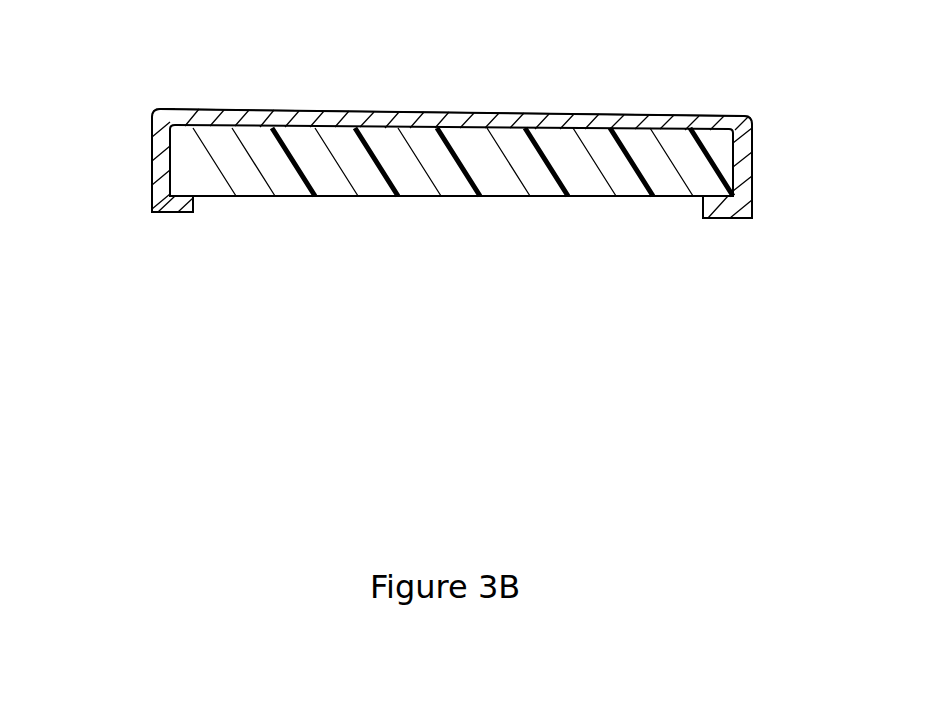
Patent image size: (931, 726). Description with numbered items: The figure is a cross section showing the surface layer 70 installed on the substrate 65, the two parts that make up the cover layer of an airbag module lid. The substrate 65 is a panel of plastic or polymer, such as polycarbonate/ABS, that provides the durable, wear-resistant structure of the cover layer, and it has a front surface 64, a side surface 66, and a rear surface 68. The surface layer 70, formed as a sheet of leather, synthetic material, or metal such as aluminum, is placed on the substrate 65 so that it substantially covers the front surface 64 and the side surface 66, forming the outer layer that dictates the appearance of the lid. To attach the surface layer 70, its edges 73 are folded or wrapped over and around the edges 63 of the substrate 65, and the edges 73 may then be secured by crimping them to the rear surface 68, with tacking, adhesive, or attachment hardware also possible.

The edges of the substrate 63 is at (173, 177).
The front surface 64 is at (660, 125).
The substrate 65 is at (342, 215).
The side surface 66 is at (165, 137).
The rear surface 68 is at (478, 197).
The surface layer 70 is at (463, 108).
The edges of the surface layer 73 is at (173, 212).